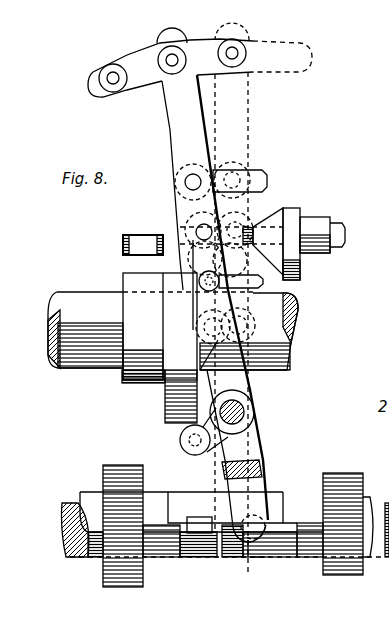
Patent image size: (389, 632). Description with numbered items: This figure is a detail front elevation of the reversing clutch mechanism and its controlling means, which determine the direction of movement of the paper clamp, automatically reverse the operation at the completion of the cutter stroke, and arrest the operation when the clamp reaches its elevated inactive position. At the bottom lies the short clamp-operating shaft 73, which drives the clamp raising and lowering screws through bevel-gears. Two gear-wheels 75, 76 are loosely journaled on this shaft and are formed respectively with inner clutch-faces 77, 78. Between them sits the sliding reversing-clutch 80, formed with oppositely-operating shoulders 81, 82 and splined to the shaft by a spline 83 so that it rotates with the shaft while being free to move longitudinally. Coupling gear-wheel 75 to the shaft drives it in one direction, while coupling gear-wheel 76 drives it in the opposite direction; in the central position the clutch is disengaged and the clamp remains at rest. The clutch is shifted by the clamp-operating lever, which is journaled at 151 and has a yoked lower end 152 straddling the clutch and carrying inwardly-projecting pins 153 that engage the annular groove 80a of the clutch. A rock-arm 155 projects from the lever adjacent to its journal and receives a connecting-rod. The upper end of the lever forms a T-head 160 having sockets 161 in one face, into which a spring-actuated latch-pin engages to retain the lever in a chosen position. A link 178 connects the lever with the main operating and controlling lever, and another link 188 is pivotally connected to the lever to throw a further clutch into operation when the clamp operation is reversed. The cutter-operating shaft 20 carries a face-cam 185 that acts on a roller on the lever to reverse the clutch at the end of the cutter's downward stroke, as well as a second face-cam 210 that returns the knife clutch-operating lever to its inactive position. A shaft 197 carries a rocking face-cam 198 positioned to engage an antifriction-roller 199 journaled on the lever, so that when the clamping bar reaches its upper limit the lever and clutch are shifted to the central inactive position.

The T-head 160 is at (195, 48).
The sockets 161 is at (172, 60).
The link 178 is at (257, 173).
The rocking face-cam 198 is at (278, 230).
The shaft 197 is at (338, 233).
The link 188 is at (287, 275).
The antifriction-roller 199 is at (192, 229).
The second face-cam 210 is at (124, 244).
The face-cam 185 is at (212, 320).
The cutter-operating shaft 20 is at (72, 307).
The journal 151 is at (247, 400).
The rock-arm 155 is at (187, 433).
The yoked lower end 152 is at (260, 473).
The gear-wheel 75 is at (118, 477).
The gear-wheel 76 is at (343, 480).
The clamp-operating shaft 73 is at (72, 543).
The inner clutch-face 77 is at (174, 523).
The spline 83 is at (188, 523).
The inner clutch-face 78 is at (285, 523).
The shoulder 82 is at (293, 533).
The shoulder 81 is at (215, 543).
The sliding reversing-clutch 80 is at (237, 557).
The inwardly-projecting pins 153 is at (250, 557).
The annular groove 80a is at (260, 557).